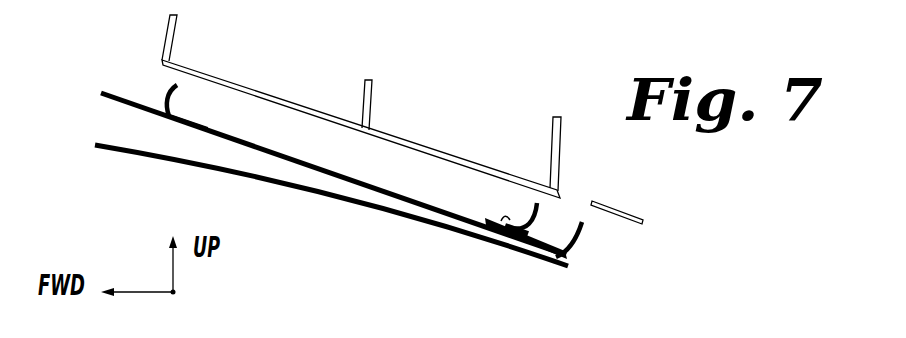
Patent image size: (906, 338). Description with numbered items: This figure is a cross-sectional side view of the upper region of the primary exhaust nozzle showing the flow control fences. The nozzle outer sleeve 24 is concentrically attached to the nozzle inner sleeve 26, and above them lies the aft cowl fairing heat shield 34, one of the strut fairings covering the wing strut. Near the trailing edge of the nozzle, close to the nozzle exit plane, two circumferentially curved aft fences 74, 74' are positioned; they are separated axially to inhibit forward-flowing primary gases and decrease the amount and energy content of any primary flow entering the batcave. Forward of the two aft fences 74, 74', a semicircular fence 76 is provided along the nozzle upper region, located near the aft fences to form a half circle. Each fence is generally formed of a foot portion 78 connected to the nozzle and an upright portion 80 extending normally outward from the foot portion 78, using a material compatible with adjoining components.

The nozzle outer sleeve 24 is at (122, 96).
The nozzle inner sleeve 26 is at (247, 177).
The aft cowl fairing heat shield 34 is at (433, 147).
The semicircular fence 76 is at (176, 103).
The foot portion 78 is at (491, 232).
The aft fence 74' is at (485, 201).
The upright portion 80 is at (527, 221).
The aft fence 74 is at (601, 255).